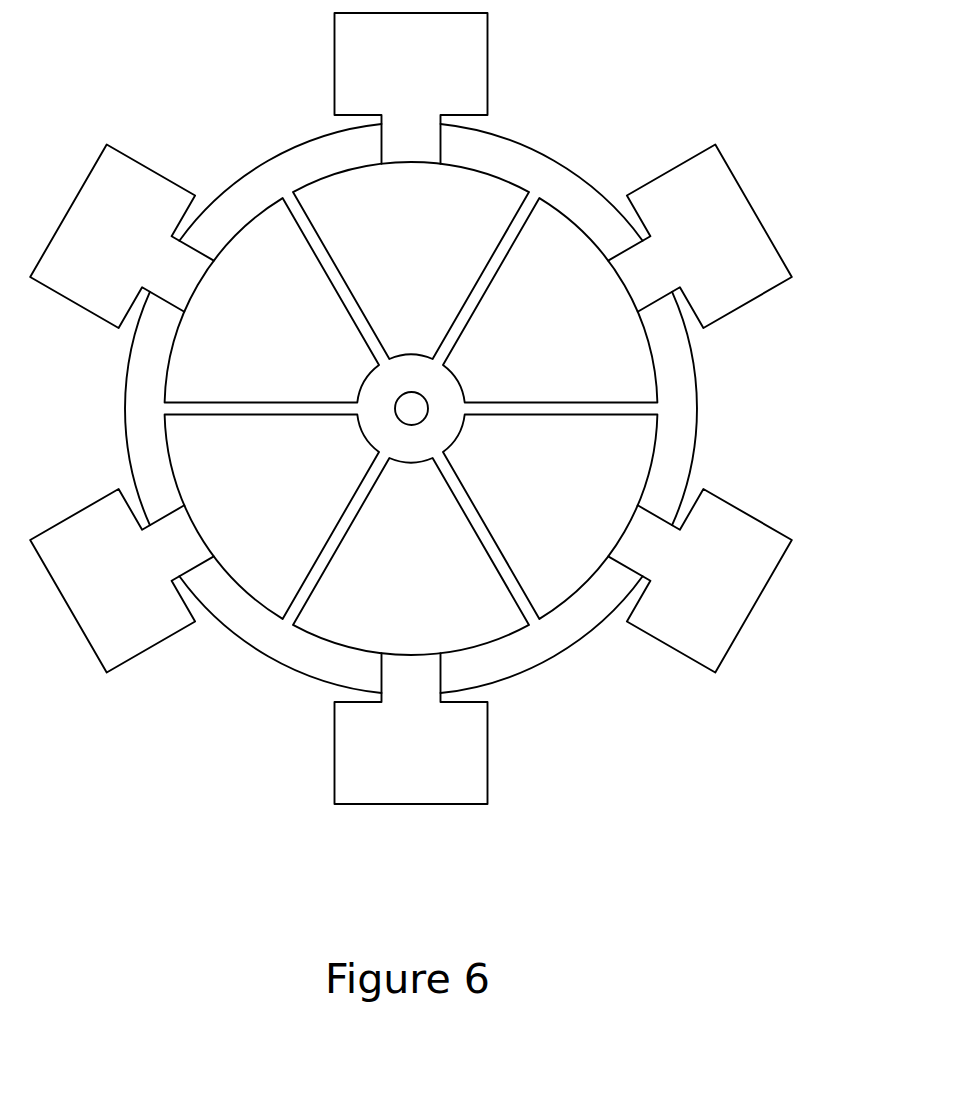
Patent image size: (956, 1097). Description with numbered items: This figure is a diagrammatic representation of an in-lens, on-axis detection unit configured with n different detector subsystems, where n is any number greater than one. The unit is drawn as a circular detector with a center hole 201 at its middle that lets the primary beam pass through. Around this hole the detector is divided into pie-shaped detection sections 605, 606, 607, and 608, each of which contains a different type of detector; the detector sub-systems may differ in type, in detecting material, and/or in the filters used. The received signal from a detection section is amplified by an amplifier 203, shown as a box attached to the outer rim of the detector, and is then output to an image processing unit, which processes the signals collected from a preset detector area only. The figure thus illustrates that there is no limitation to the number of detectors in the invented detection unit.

The center hole 201 is at (442, 400).
The amplifier 203 is at (411, 88).
The detection section 605 is at (411, 260).
The detection section 606 is at (550, 300).
The detection section 607 is at (550, 517).
The detection section 608 is at (272, 517).